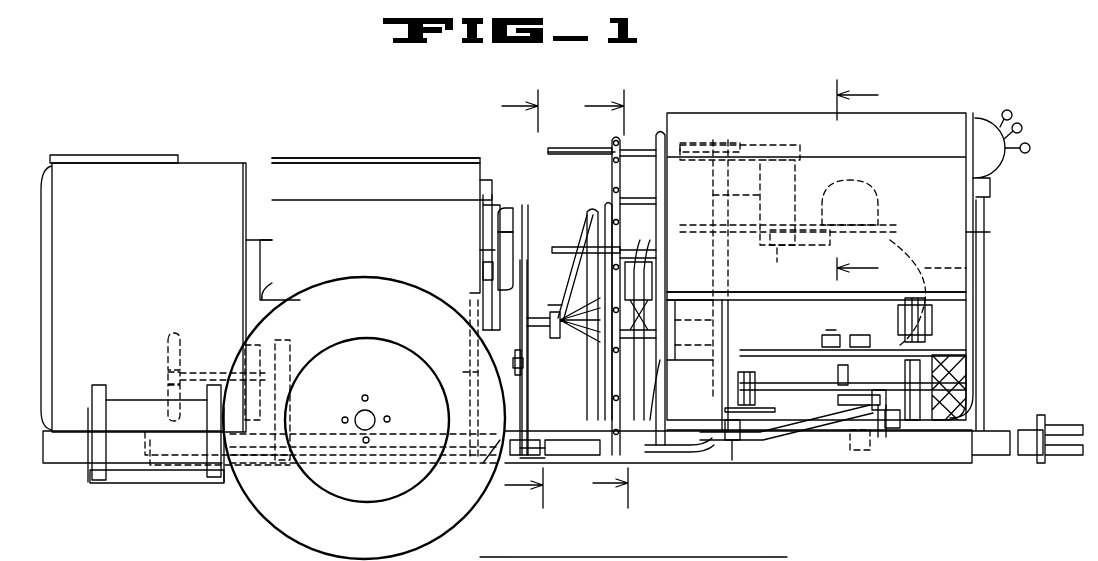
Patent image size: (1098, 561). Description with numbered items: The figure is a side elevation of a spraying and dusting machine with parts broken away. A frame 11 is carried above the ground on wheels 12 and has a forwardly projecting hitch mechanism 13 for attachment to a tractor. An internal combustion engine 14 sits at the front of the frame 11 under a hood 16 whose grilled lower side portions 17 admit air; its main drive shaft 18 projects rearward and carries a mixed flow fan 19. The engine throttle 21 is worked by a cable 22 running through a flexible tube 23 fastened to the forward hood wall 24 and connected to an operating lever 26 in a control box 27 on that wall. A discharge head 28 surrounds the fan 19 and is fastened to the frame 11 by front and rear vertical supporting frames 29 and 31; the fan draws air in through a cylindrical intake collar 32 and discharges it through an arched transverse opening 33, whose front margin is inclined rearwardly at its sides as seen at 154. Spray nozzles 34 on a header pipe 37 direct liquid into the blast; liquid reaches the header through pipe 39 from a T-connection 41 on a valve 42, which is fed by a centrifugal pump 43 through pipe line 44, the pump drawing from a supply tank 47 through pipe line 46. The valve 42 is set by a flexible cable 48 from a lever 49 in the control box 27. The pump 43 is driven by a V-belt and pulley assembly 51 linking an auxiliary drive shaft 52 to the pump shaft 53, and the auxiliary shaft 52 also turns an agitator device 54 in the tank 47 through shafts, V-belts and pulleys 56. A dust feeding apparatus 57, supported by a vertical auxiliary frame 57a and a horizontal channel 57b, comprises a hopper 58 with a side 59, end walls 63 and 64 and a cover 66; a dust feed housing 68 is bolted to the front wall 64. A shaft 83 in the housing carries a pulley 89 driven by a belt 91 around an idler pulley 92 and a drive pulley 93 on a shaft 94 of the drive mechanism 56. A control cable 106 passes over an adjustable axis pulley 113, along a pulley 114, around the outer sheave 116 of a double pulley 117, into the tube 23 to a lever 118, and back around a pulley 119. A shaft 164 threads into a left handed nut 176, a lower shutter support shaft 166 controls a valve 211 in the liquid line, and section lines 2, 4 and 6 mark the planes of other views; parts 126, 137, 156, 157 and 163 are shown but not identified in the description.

The frame 11 is at (72, 460).
The wheels 12 is at (280, 530).
The hitch mechanism 13 is at (1045, 430).
The internal combustion engine 14 is at (868, 252).
The hood 16 is at (918, 127).
The grilled lower side portions 17 is at (966, 378).
The main engine drive shaft 18 is at (640, 320).
The mixed flow fan 19 is at (650, 253).
The engine throttle 21 is at (868, 220).
The cable 22 is at (966, 268).
The flexible tube 23 is at (966, 295).
The forward wall of the hood 24 is at (990, 232).
The operating lever 26 is at (1022, 128).
The control box 27 is at (1000, 165).
The discharge head 28 is at (659, 124).
The front vertical supporting frame 29 is at (732, 460).
The rear vertical supporting frame 31 is at (613, 465).
The cylindrical intake collar 32 is at (593, 213).
The arched transverse opening 33 is at (628, 186).
The spray nozzles 34 is at (615, 143).
The header pipe 37 is at (615, 133).
The pipe 39 is at (800, 430).
The T-connection 41 is at (883, 437).
The valve 42 is at (867, 403).
The centrifugal pump 43 is at (857, 435).
The pipe line 44 is at (832, 337).
The pipe line 46 is at (185, 462).
The supply tank 47 is at (123, 203).
The flexible cable 48 is at (935, 407).
The lever 49 is at (1030, 148).
The V-belt and pulley assembly 51 is at (928, 272).
The auxiliary drive shaft 52 is at (893, 315).
The pump shaft 53 is at (892, 428).
The agitator device 54 is at (200, 372).
The series of shafts, V-belts and pulleys 56 is at (797, 383).
The dust feeding apparatus 57 is at (376, 158).
The vertical auxiliary frame 57a is at (463, 372).
The horizontal channel 57b is at (274, 284).
The hopper 58 is at (482, 182).
The side 59 is at (388, 252).
The end wall 63 is at (258, 240).
The end wall 64 is at (483, 238).
The cover 66 is at (455, 158).
The dust feed housing 68 is at (483, 252).
The shaft 83 is at (530, 292).
The pulley 89 is at (563, 317).
The belt 91 is at (528, 400).
The idler pulley 92 is at (528, 380).
The drive pulley 93 is at (538, 455).
The shaft 94 is at (393, 437).
The cable 106 is at (503, 230).
The adjustable axis pulley 113 is at (483, 206).
The pulley 114 is at (503, 250).
The outer sheave 116 is at (497, 443).
The double pulley 117 is at (483, 463).
The lever 118 is at (1012, 113).
The pulley 119 is at (483, 260).
The plate 126 is at (470, 342).
The block 137 is at (628, 250).
The inclined front margin of opening 154 is at (623, 360).
The engine part 156 is at (632, 170).
The engine part 157 is at (713, 200).
The bar 163 is at (550, 150).
The shaft 164 is at (567, 243).
The lower shutter support shaft 166 is at (524, 360).
The left handed nut 176 is at (777, 249).
The valve 211 is at (727, 437).
The section line 2 is at (522, 298).
The section line 4 is at (857, 178).
The section line 6 is at (606, 297).